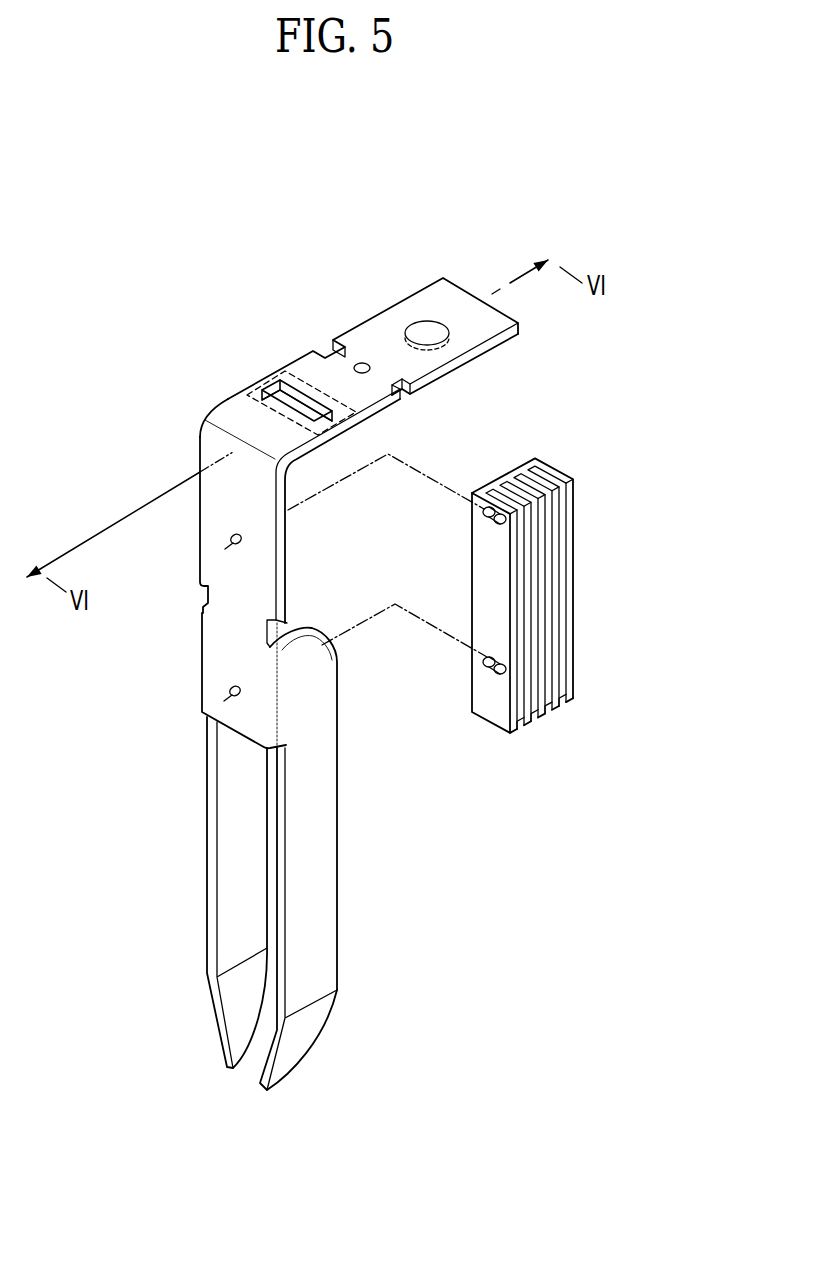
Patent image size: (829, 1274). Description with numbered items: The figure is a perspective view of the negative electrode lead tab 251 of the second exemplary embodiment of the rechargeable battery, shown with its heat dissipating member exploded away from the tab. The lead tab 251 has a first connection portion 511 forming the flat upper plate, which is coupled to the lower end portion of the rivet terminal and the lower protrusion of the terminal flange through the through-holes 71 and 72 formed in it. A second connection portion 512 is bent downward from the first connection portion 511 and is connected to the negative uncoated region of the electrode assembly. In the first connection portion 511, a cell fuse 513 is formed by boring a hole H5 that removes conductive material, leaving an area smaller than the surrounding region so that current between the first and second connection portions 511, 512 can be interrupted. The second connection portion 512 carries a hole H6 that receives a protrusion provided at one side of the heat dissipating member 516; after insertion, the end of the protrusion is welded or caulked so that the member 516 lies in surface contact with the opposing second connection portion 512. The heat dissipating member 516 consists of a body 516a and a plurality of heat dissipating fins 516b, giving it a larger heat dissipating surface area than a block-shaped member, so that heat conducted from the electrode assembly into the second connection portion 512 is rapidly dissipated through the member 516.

The negative electrode lead tab 251 is at (332, 163).
The first connection portion 511 is at (291, 352).
The second connection portion 512 is at (190, 672).
The cell fuse 513 is at (268, 380).
The hole H5 is at (290, 408).
The hole H6 is at (232, 538).
The through-hole 71 is at (411, 322).
The through-hole 72 is at (359, 363).
The heat dissipating member 516 is at (652, 393).
The body 516a is at (510, 457).
The heat dissipating fins 516b is at (568, 472).